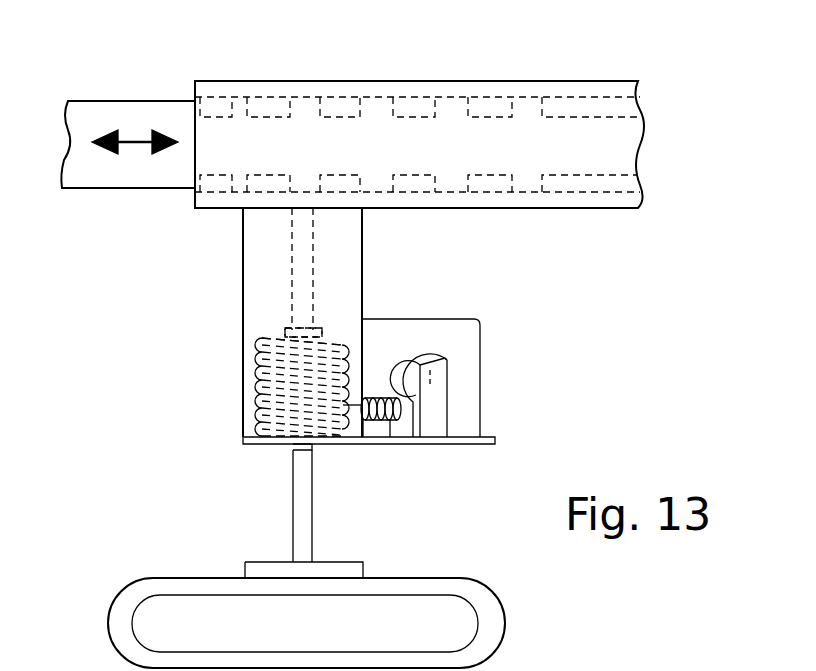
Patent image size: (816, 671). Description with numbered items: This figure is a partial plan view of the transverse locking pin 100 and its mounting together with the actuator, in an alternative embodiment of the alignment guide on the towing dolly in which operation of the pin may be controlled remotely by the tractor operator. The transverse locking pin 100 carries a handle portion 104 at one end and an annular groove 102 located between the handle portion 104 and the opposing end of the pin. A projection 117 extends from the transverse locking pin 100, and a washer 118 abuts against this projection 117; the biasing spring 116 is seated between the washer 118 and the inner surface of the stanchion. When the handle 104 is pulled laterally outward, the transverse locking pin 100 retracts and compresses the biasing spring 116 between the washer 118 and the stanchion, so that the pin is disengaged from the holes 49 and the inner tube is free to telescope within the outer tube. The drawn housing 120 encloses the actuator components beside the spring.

The holes 49 is at (233, 110).
The transverse locking pin 100 is at (290, 283).
The annular groove 102 is at (318, 445).
The handle portion 104 is at (213, 650).
The biasing spring 116 is at (264, 406).
The projection 117 is at (318, 328).
The washer 118 is at (268, 342).
The housing 120 is at (467, 330).